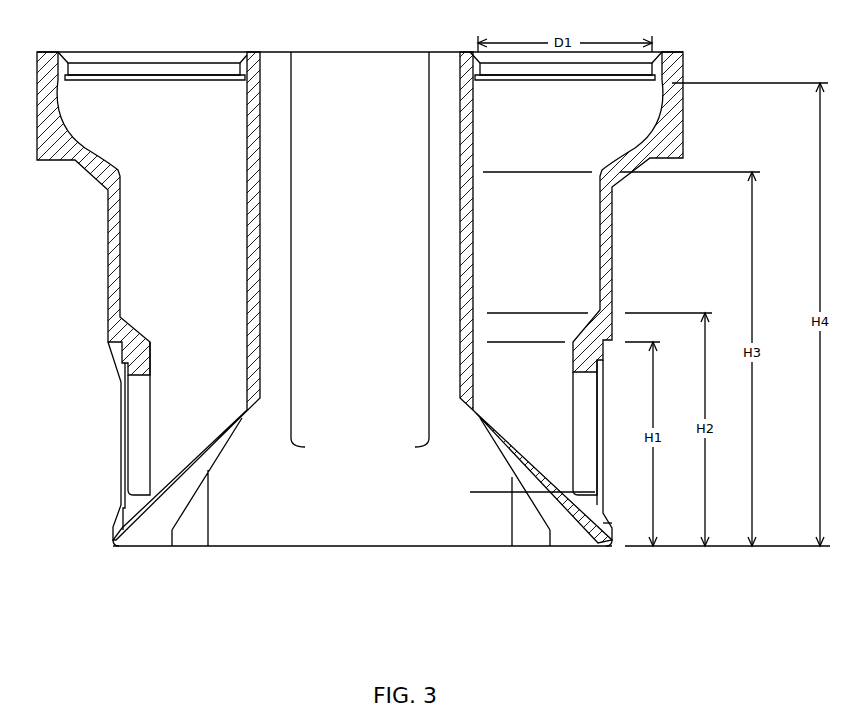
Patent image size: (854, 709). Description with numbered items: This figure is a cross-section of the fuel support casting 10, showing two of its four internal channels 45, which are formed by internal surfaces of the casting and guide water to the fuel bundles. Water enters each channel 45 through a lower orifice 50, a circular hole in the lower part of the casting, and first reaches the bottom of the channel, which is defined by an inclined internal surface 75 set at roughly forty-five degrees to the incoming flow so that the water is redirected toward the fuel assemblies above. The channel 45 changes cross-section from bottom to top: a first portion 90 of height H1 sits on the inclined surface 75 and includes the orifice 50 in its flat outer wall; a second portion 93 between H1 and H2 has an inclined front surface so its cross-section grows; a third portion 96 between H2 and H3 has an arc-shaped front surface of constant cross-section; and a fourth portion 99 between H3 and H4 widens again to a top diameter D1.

The fuel support casting 10 is at (95, 545).
The channel 45 is at (518, 213).
The lower orifice 50 is at (588, 423).
The internal surface 75 is at (511, 413).
The first portion 90 is at (547, 492).
The second portion 93 is at (547, 313).
The third portion 96 is at (551, 321).
The fourth portion 99 is at (551, 180).